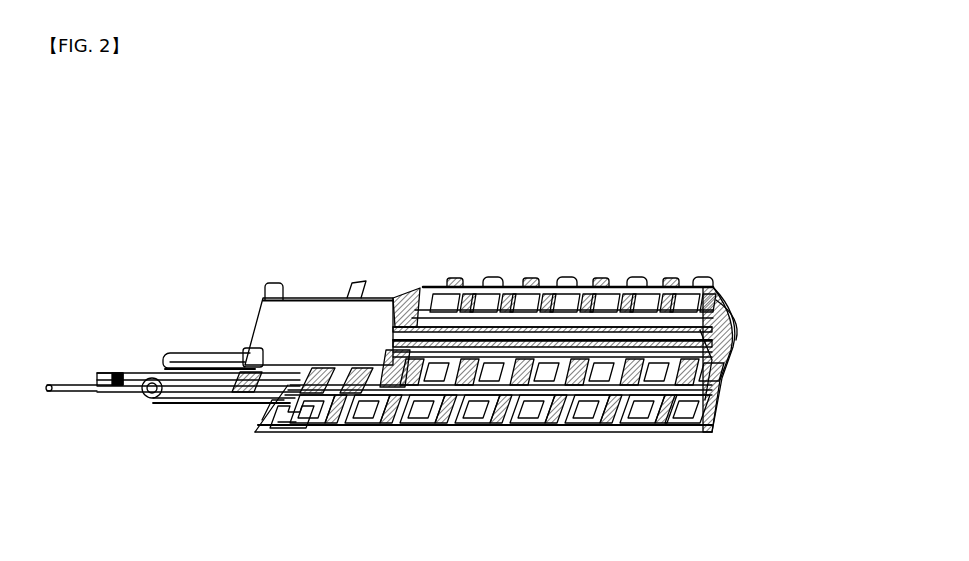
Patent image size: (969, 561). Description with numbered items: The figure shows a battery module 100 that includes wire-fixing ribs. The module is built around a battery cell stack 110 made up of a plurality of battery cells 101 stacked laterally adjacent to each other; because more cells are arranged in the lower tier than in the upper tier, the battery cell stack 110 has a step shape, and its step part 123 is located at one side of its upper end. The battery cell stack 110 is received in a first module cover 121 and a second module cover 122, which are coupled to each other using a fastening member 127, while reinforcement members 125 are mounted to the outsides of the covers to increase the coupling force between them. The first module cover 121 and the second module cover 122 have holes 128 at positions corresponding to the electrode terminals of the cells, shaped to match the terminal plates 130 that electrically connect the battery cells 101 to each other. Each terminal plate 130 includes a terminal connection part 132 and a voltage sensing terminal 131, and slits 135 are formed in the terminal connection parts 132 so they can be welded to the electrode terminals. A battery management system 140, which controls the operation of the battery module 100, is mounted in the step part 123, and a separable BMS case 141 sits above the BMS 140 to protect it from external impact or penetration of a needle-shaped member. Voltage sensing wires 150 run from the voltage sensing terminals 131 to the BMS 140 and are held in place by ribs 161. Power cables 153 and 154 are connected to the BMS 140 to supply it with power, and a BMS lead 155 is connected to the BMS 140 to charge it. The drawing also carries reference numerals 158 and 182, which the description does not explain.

The battery module 100 is at (110, 140).
The battery cell 101 is at (723, 290).
The battery cell stack 110 is at (719, 367).
The first module cover 121 is at (585, 430).
The second module cover 122 is at (585, 280).
The step part 123 is at (253, 430).
The reinforcement member 125 is at (327, 380).
The fastening member 127 is at (443, 430).
The hole 128 is at (407, 430).
The terminal plate 130 is at (302, 430).
The voltage sensing terminal 131 is at (438, 280).
The terminal connection part 132 is at (635, 430).
The slit 135 is at (533, 430).
The battery management system (BMS) 140 is at (242, 380).
The BMS case 141 is at (318, 310).
The voltage sensing wire 150 is at (508, 280).
The power cable 153 is at (107, 390).
The power cable 154 is at (712, 365).
The BMS lead 155 is at (167, 352).
The end bulge 158 is at (732, 323).
The rib 161 is at (480, 280).
The latch protrusion 182 is at (528, 280).